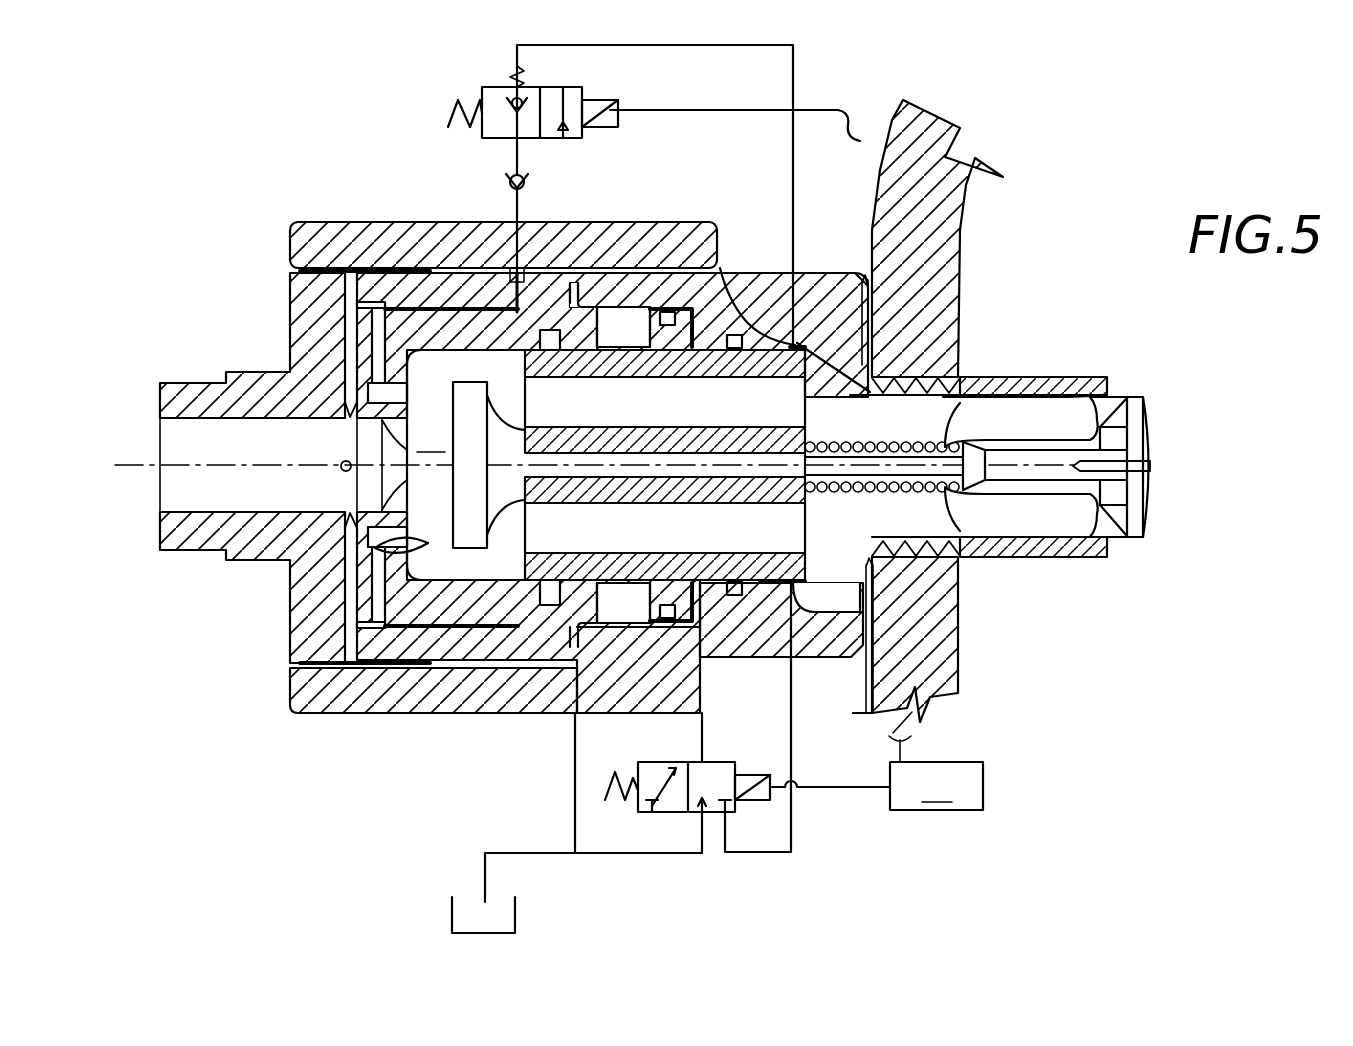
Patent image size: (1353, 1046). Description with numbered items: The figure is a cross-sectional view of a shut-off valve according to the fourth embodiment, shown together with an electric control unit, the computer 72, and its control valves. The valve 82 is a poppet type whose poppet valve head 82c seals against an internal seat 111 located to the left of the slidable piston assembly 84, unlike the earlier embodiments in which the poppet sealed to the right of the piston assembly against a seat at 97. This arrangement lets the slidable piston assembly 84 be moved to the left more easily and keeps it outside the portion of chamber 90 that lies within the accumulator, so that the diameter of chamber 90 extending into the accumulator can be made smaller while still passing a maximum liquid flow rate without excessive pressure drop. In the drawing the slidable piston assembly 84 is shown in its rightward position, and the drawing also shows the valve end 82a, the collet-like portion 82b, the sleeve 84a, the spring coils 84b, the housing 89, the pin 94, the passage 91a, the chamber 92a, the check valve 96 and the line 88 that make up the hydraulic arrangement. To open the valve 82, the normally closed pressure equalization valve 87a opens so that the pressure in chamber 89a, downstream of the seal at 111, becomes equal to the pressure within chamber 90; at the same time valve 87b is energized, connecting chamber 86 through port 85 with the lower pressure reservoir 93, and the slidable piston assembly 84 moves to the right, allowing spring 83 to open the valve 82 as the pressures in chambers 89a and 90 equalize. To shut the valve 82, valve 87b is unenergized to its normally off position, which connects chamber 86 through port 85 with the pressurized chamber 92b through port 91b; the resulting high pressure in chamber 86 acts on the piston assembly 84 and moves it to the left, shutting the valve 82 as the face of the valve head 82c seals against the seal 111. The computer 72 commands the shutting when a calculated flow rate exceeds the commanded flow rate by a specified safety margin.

The computer 72 is at (936, 786).
The valve 82 is at (1153, 452).
The drawbar head 82a is at (1147, 397).
The drawbar collet end 82b is at (1008, 472).
The poppet valve head 82c is at (440, 545).
The spring 83 is at (990, 392).
The slidable piston assembly 84 is at (728, 268).
The piston sleeve 84a is at (810, 432).
The spring 84b is at (793, 470).
The port 85 is at (704, 714).
The chamber 86 is at (732, 655).
The pressure equalization valve 87a is at (573, 97).
The valve 87b is at (725, 812).
The hydraulic line 88 is at (568, 717).
The housing 89 is at (517, 270).
The chamber 89a is at (268, 461).
The chamber 90 is at (737, 465).
The passage 91a is at (866, 300).
The port 91b is at (862, 660).
The clamp block 92a is at (845, 365).
The pressurized chamber 92b is at (810, 614).
The low pressure reservoir 93 is at (517, 913).
The pin 94 is at (350, 412).
The check valve 96 is at (533, 182).
The seat 97 is at (1100, 560).
The internal seat 111 is at (400, 550).